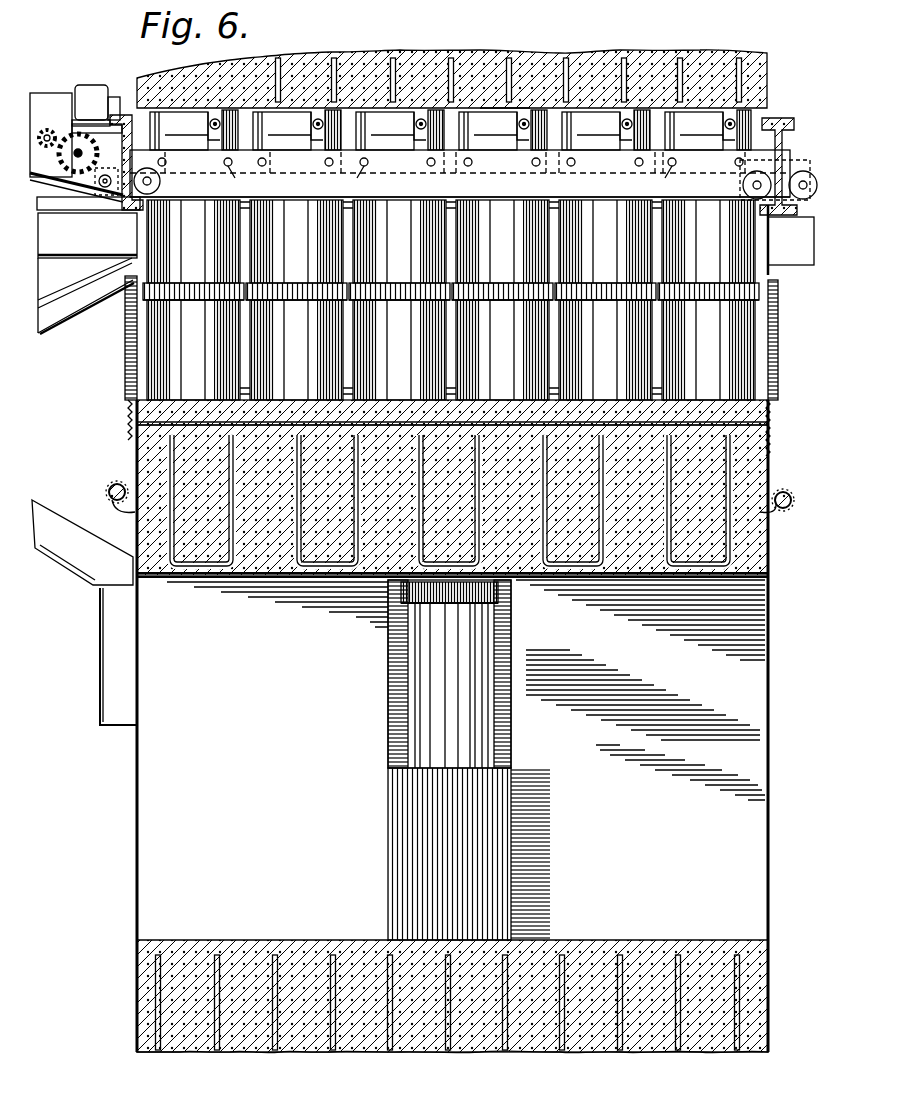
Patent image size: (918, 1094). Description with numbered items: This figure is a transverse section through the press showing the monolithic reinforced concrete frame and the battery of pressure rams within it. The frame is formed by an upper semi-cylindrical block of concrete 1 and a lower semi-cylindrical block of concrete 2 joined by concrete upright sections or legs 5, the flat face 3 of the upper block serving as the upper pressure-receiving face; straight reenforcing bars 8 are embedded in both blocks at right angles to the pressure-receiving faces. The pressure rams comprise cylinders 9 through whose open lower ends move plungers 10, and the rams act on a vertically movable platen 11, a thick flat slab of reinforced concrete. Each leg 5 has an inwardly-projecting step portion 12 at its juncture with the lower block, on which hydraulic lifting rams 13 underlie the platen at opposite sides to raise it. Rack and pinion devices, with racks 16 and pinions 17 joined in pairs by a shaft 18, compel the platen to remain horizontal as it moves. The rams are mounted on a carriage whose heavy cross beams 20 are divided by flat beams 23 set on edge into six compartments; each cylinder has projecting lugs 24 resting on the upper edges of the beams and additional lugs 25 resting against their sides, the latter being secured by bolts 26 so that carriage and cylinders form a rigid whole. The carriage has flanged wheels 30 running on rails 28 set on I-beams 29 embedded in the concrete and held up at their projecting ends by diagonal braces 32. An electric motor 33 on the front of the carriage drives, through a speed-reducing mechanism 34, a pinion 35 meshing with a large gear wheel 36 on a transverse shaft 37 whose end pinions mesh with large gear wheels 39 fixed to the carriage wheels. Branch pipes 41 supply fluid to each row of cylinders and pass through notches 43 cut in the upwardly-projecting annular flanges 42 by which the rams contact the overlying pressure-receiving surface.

The semi-cylindrical block of concrete 1 is at (612, 52).
The semi-cylindrical block of concrete 2 is at (293, 1056).
The flat face 3 is at (485, 108).
The concrete upright section 5 is at (770, 745).
The straight reenforcing bars 8 is at (450, 60).
The cylinders 9 is at (451, 250).
The plungers 10 is at (451, 350).
The platen 11 is at (641, 578).
The step portion 12 is at (500, 770).
The lifting rams 13 is at (495, 693).
The racks 16 is at (125, 352).
The pinions 17 is at (125, 392).
The shaft 18 is at (450, 392).
The cross beams 20 is at (122, 114).
The flat beams 23 is at (455, 174).
The projecting lugs 24 is at (184, 183).
The additional lugs 25 is at (293, 168).
The bolts 26 is at (457, 181).
The rails 28 is at (87, 273).
The I-beams 29 is at (83, 245).
The flanged wheels 30 is at (170, 183).
The diagonal braces 32 is at (52, 512).
The electric motor 33 is at (92, 84).
The speed-reducing mechanism 34 is at (60, 93).
The pinion 35 is at (47, 128).
The large gear wheel 36 is at (78, 153).
The transverse shaft 37 is at (94, 174).
The large gear wheels 39 is at (85, 191).
The branch pipes 41 is at (213, 120).
The annular flanges 42 is at (230, 110).
The notches 43 is at (288, 100).